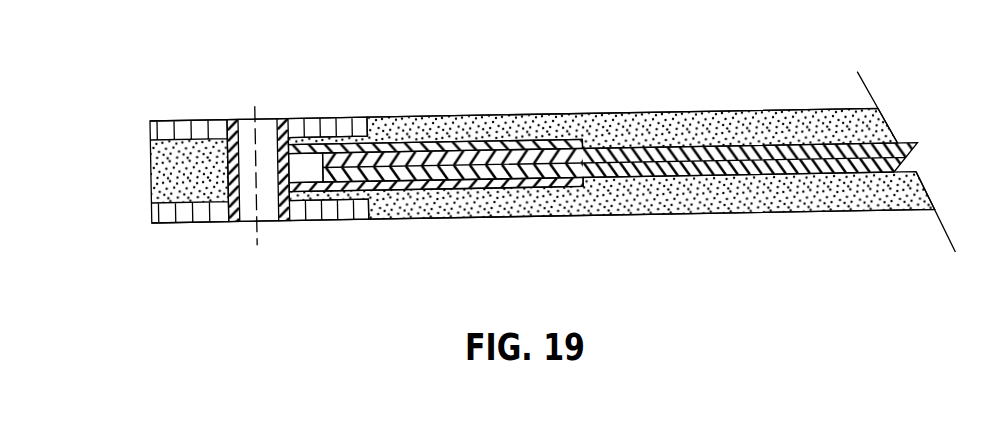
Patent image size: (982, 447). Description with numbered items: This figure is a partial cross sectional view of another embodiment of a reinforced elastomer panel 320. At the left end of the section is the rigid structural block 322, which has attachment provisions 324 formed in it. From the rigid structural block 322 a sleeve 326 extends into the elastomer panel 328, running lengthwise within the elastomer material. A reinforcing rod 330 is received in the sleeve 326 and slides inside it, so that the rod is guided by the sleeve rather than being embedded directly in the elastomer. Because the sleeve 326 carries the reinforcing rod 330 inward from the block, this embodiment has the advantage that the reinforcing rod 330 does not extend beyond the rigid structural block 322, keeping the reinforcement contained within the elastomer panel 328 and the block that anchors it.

The reinforced elastomer panel 320 is at (486, 56).
The rigid structural block 322 is at (193, 120).
The attachment provisions 324 is at (243, 217).
The sleeve 326 is at (404, 193).
The elastomer panel 328 is at (399, 122).
The reinforcing rod 330 is at (643, 147).